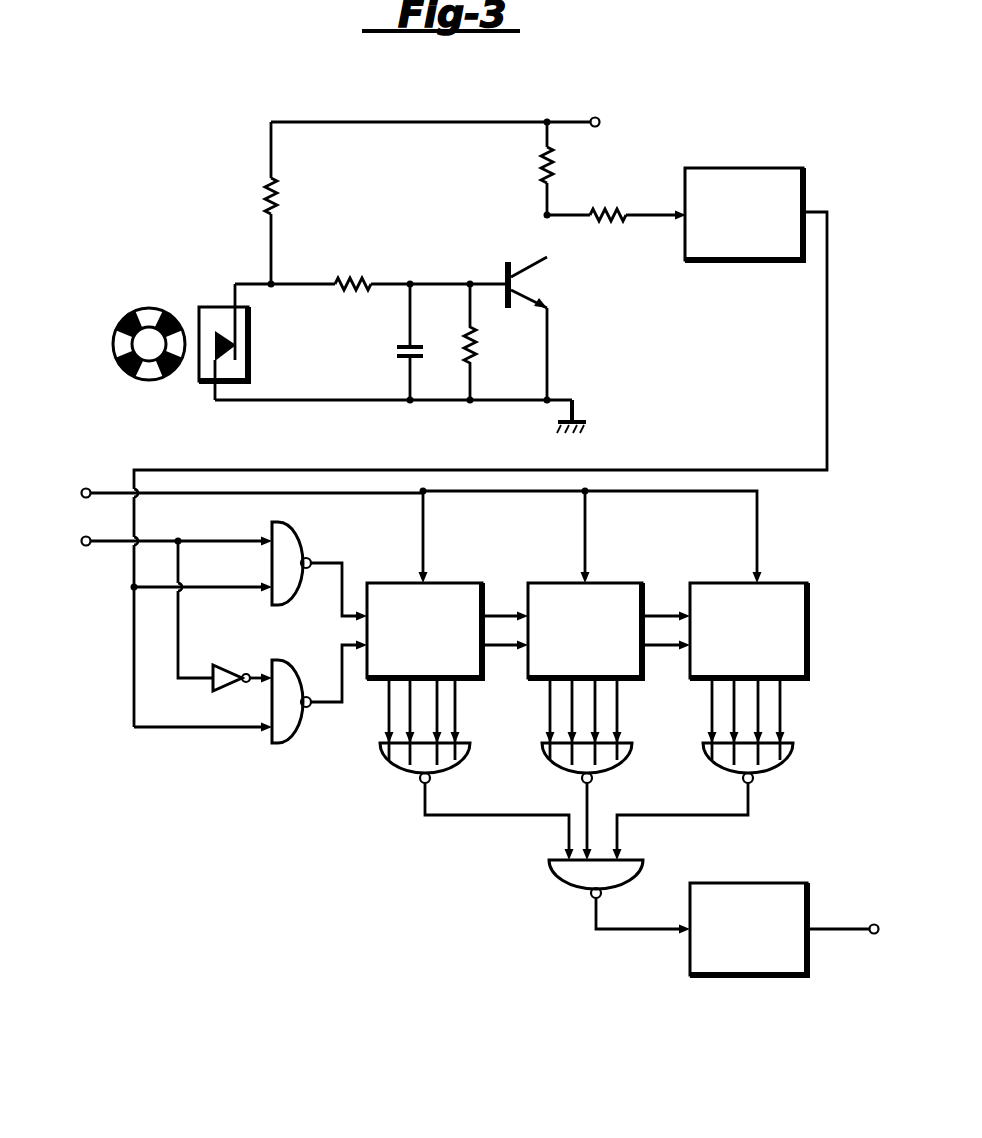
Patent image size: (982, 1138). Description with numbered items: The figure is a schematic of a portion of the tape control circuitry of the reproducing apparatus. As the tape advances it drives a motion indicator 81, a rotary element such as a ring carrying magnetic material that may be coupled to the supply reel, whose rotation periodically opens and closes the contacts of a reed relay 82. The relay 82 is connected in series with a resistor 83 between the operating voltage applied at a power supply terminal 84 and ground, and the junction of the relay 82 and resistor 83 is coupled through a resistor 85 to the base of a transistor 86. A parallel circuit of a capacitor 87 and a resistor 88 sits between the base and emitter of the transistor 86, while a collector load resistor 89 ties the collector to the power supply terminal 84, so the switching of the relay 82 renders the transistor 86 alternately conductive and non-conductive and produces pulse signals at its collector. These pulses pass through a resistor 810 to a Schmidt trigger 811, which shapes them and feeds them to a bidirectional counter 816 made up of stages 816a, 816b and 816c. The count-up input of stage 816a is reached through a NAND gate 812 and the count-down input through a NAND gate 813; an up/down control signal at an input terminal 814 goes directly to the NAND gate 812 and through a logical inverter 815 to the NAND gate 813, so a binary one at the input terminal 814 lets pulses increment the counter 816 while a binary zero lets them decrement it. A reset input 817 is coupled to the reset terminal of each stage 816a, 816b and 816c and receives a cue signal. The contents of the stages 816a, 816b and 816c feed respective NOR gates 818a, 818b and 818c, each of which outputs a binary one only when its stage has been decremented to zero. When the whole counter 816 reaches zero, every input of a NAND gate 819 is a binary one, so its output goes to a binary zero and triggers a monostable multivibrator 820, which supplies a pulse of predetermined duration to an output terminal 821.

The motion indicator 81 is at (122, 375).
The reed relay 82 is at (249, 363).
The resistor 83 is at (268, 201).
The power supply terminal 84 is at (595, 127).
The resistor 85 is at (353, 277).
The transistor 86 is at (508, 309).
The capacitor 87 is at (396, 346).
The resistor 88 is at (466, 347).
The collector load resistor 89 is at (543, 165).
The resistor 810 is at (607, 222).
The Schmidt trigger 811 is at (740, 262).
The NAND gate 812 is at (270, 598).
The NAND gate 813 is at (272, 735).
The input terminal 814 is at (88, 546).
The logical inverter 815 is at (214, 690).
The bidirectional counter 816 is at (612, 646).
The counter stage 816a is at (478, 680).
The counter stage 816b is at (638, 680).
The counter stage 816c is at (795, 680).
The reset input 817 is at (102, 515).
The NOR gate 818a is at (396, 765).
The NOR gate 818b is at (560, 766).
The NOR gate 818c is at (724, 768).
The NAND gate 819 is at (566, 883).
The monostable multivibrator 820 is at (741, 882).
The output terminal 821 is at (870, 926).